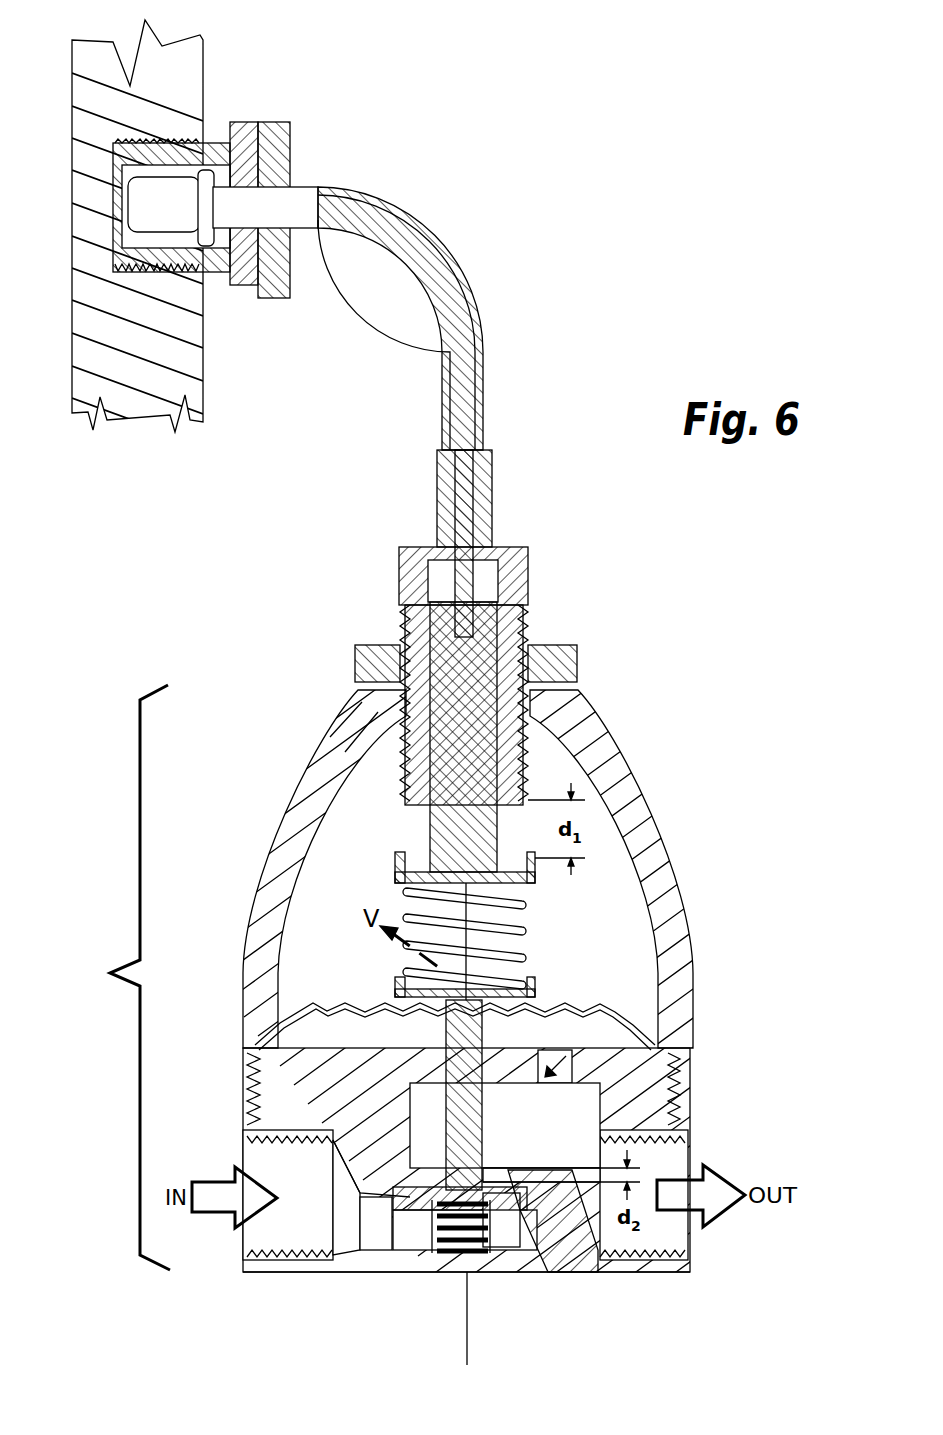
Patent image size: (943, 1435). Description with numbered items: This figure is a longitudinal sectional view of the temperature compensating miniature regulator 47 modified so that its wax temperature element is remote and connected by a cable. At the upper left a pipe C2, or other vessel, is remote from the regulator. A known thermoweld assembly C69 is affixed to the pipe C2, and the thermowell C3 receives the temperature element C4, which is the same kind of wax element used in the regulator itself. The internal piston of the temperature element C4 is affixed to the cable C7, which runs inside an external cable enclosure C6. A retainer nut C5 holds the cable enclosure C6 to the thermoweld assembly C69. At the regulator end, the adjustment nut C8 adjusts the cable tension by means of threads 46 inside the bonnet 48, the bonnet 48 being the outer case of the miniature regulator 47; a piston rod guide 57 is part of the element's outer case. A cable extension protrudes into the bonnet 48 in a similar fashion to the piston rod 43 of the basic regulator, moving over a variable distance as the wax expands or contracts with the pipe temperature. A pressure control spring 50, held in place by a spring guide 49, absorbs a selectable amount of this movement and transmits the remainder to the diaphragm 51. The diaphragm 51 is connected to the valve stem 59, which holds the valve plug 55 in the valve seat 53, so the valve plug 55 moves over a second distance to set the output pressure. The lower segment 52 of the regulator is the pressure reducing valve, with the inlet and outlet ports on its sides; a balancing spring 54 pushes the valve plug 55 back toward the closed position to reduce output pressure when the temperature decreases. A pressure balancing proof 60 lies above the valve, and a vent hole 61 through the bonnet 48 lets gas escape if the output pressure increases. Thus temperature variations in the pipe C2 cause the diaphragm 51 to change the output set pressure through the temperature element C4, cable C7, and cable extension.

The pipe C2 is at (203, 68).
The thermowell C3 is at (180, 268).
The temperature element C4 is at (165, 215).
The retainer nut C5 is at (287, 248).
The cable enclosure C6 is at (395, 208).
The cable C7 is at (445, 295).
The adjustment nut C8 is at (375, 647).
The thermoweld assembly C69 is at (312, 338).
The piston rod 43 is at (522, 750).
The threads 46 is at (578, 695).
The bonnet 48 is at (605, 735).
The spring guide 49 is at (533, 884).
The pressure control spring 50 is at (410, 917).
The diaphragm 51 is at (590, 985).
The pressure reducing valve 52 is at (710, 1080).
The valve seat 53 is at (396, 1195).
The balancing spring 54 is at (430, 1247).
The valve plug 55 is at (530, 1210).
The piston rod guide 57 is at (410, 773).
The valve stem 59 is at (480, 1158).
The pressure balancing proof 60 is at (577, 993).
The vent hole through the bonnet 61 is at (331, 737).
The miniature regulator 47 is at (116, 977).